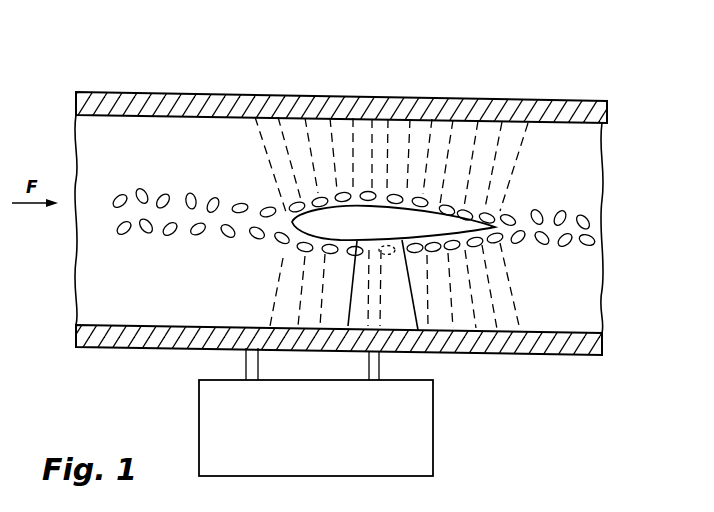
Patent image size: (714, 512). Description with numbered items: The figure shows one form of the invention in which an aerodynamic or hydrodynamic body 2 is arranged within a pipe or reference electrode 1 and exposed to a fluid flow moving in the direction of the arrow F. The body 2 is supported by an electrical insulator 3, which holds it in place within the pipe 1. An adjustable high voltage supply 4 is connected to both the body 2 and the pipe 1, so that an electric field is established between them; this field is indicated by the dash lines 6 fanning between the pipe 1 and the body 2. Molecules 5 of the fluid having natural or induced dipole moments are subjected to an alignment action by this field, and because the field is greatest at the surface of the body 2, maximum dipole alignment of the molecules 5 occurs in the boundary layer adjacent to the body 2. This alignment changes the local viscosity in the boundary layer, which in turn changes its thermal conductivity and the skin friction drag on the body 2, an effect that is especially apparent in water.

The pipe or reference electrode 1 is at (335, 104).
The aerodynamic or hydrodynamic body 2 is at (438, 223).
The electrical insulator 3 is at (400, 293).
The adjustable high voltage supply 4 is at (413, 427).
The molecule 5 is at (214, 200).
The dash lines 6 is at (268, 175).